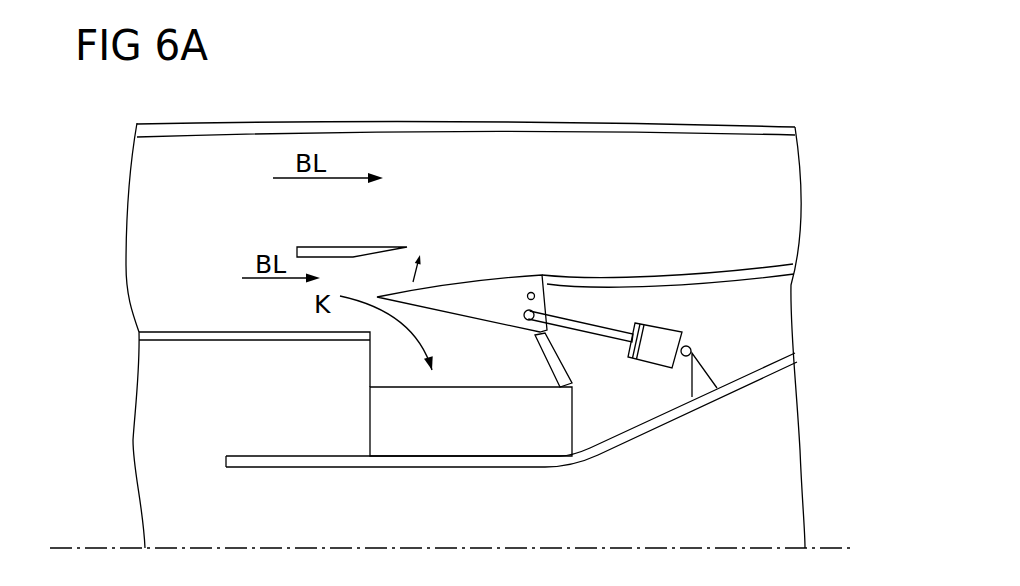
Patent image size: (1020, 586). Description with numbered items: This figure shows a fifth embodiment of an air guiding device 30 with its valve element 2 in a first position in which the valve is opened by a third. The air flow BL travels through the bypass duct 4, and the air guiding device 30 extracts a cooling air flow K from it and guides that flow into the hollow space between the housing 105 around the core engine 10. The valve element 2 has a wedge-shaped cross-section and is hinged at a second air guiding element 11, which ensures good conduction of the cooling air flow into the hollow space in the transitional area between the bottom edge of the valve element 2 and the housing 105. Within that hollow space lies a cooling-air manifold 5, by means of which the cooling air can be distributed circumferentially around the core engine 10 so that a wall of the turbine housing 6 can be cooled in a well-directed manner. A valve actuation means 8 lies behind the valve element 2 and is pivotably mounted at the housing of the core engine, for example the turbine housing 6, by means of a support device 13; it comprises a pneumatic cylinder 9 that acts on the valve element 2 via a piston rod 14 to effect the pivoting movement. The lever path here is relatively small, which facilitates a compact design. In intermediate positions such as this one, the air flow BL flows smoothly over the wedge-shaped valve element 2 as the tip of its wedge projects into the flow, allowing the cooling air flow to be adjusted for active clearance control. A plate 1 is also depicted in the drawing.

The aerofoil / splitter plate 1 is at (361, 252).
The valve element 2 is at (473, 292).
The bypass duct 4 is at (674, 225).
The cooling-air manifold 5 is at (548, 414).
The turbine housing 6 is at (689, 408).
The valve actuation means 8 is at (650, 396).
The pneumatic cylinder 9 is at (663, 334).
The core engine 10 is at (673, 519).
The second air guiding element 11 is at (553, 367).
The support device 13 is at (702, 378).
The piston rod 14 is at (581, 326).
The air guiding device 30 is at (533, 242).
The housing 105 is at (215, 333).